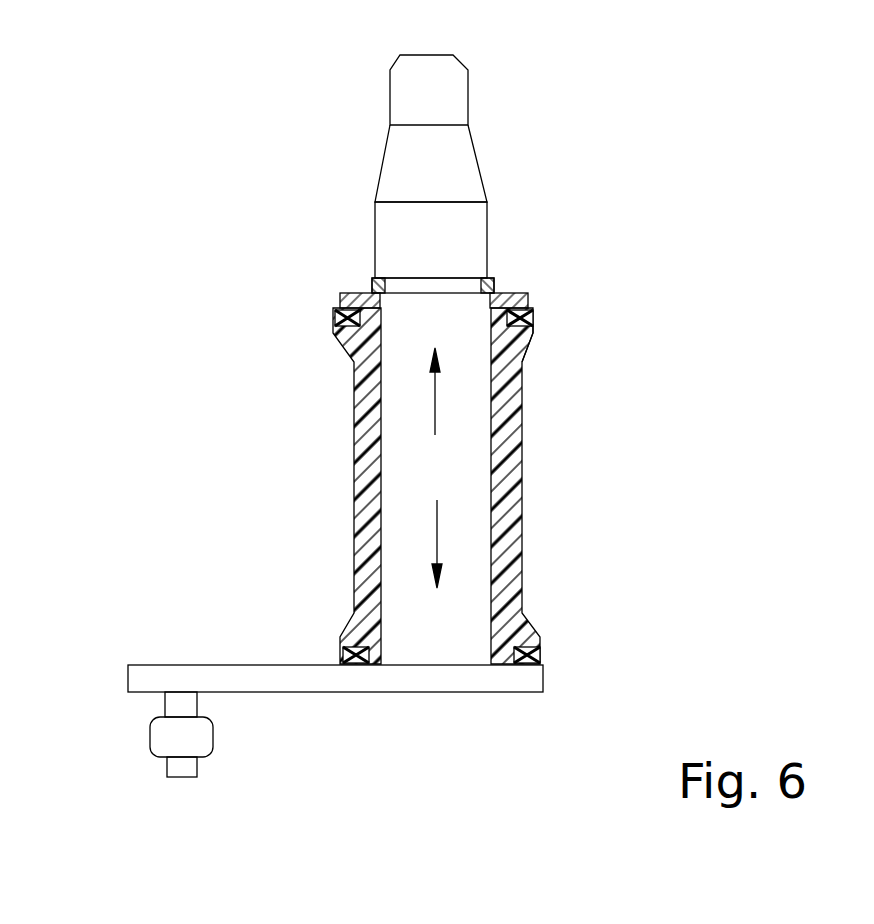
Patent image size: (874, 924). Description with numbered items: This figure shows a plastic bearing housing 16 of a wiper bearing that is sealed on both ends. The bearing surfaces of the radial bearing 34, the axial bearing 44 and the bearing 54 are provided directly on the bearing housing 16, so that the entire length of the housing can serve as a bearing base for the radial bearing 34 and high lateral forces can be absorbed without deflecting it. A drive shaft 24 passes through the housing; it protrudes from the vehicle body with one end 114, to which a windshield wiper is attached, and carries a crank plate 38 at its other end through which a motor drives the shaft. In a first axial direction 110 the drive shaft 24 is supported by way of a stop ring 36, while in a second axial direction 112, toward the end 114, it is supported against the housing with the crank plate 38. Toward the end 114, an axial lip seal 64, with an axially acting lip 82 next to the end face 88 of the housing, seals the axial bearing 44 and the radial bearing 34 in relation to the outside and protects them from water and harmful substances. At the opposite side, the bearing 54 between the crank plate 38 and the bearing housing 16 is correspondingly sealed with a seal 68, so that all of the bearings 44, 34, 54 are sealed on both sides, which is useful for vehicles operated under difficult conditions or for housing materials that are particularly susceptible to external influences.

The end 114 is at (510, 100).
The drive shaft 24 is at (455, 182).
The stop ring 36 is at (525, 290).
The axial bearing 44 is at (343, 298).
The radial bearing 34 is at (355, 452).
The bearing housing 16 is at (510, 465).
The end face 88 is at (338, 318).
The axially acting lip 82 is at (533, 310).
The axial lip seal 64 is at (535, 322).
The bearing 54 is at (540, 662).
The seal 68 is at (540, 642).
The second axial direction 112 is at (435, 405).
The first axial direction 110 is at (437, 538).
The crank plate 38 is at (150, 688).